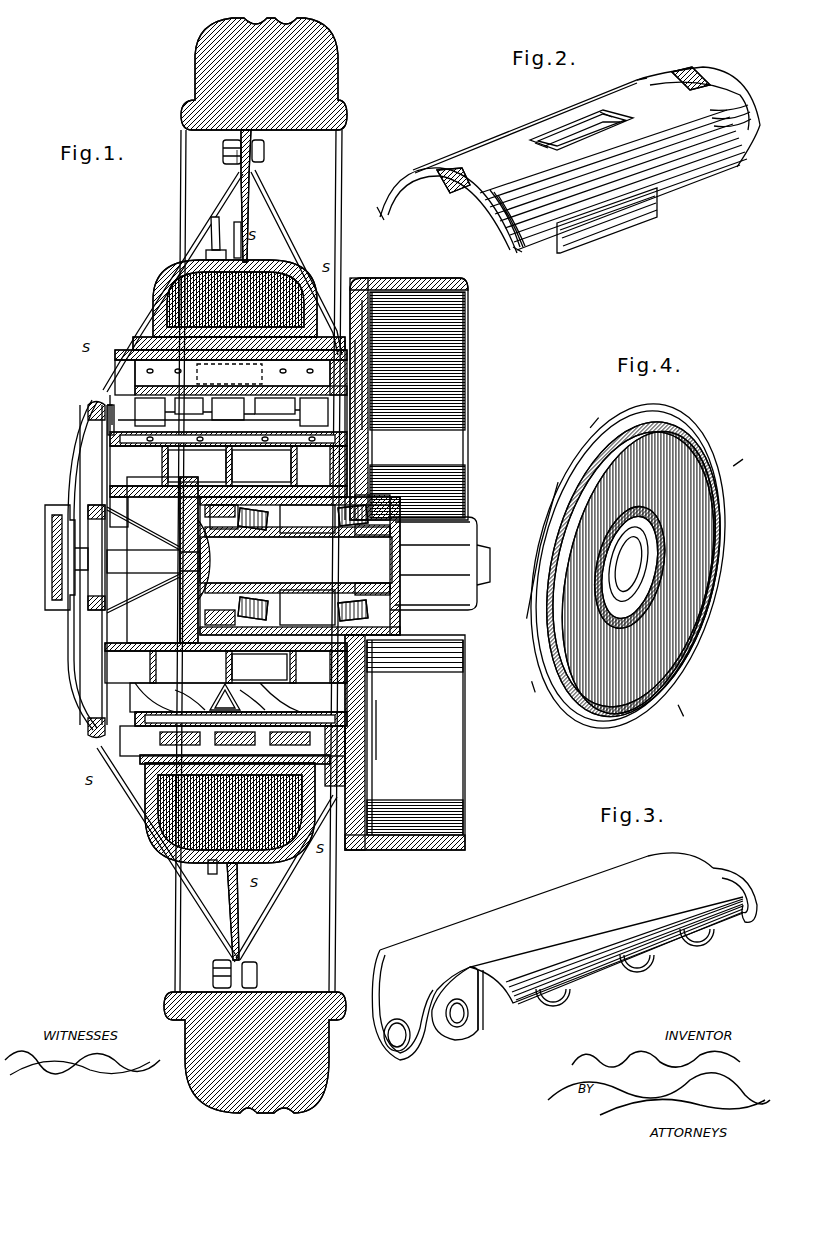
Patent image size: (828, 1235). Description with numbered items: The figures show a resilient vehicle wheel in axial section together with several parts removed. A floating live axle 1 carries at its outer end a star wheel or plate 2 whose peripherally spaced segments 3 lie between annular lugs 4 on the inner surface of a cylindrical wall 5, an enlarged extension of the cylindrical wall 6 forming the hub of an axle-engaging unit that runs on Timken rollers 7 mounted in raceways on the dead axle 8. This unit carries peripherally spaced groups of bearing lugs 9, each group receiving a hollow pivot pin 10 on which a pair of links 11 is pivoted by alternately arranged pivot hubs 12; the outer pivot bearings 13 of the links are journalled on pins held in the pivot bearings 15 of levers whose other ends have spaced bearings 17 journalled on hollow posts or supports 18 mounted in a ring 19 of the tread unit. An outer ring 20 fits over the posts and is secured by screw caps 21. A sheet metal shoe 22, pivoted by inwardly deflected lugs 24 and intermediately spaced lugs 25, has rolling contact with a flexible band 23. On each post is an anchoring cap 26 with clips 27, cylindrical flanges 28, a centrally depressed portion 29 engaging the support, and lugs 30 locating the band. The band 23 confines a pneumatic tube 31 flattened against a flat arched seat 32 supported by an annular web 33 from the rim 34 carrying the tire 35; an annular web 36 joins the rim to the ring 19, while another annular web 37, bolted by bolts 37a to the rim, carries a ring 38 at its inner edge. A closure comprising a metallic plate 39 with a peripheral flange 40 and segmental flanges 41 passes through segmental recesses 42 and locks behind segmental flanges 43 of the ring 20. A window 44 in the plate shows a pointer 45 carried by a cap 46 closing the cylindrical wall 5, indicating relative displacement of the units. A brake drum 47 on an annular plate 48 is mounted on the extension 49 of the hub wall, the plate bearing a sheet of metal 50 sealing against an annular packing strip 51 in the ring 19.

In FIG. 1, the floating live axle 1 is at (498, 556).
In FIG. 1, the star wheel or plate 2 is at (185, 527).
In FIG. 1, the peripherally spaced segments 3 is at (180, 633).
In FIG. 1, the annular lugs 4 is at (176, 483).
In FIG. 1, the cylindrical wall 5 is at (155, 480).
In FIG. 1, the cylindrical wall 6 is at (265, 490).
In FIG. 1, the Timken rollers 7 is at (270, 514).
In FIG. 1, the dead axle 8 is at (300, 566).
In FIG. 1, the bearing lugs 9 is at (222, 462).
In FIG. 1, the pivot pin 10 is at (228, 579).
In FIG. 1, the links 11 is at (228, 413).
In FIG. 1, the pivot hubs 12 is at (226, 663).
In FIG. 1, the pivot bearings 13 is at (238, 697).
In FIG. 1, the pivot bearings 15 is at (225, 697).
In FIG. 1, the spaced bearings 17 is at (241, 379).
In FIG. 1, the hollow post or support 18 is at (232, 373).
In FIG. 1, the ring 19 is at (376, 780).
In FIG. 1, the outer ring 20 is at (88, 408).
In FIG. 1, the screw caps 21 is at (112, 366).
In FIG. 1, the shoe 22 is at (230, 812).
In FIG. 3, the shoe 22 is at (540, 890).
In FIG. 1, the flexible band 23 is at (160, 340).
In FIG. 1, the inwardly deflected lugs 24 is at (160, 748).
In FIG. 3, the inwardly deflected lugs 24 is at (740, 925).
In FIG. 1, the intermediately spaced lugs 25 is at (214, 694).
In FIG. 3, the intermediately spaced lugs 25 is at (482, 1030).
In FIG. 2, the anchoring cap 26 is at (498, 153).
In FIG. 2, the clips 27 is at (615, 222).
In FIG. 2, the cylindrical flanges 28 is at (458, 205).
In FIG. 1, the centrally depressed portion 29 is at (229, 374).
In FIG. 2, the centrally depressed portion 29 is at (565, 127).
In FIG. 2, the lug 30 is at (447, 168).
In FIG. 1, the pneumatic tube 31 is at (170, 280).
In FIG. 1, the flat arched seat 32 is at (205, 262).
In FIG. 1, the annular web 33 is at (247, 205).
In FIG. 1, the rim 34 is at (340, 160).
In FIG. 1, the tire 35 is at (322, 68).
In FIG. 1, the annular web 36 is at (300, 270).
In FIG. 1, the annular web 37 is at (150, 300).
In FIG. 1, the bolts 37a is at (228, 160).
In FIG. 1, the ring 38 is at (120, 350).
In FIG. 1, the metallic plate 39 is at (68, 645).
In FIG. 4, the metallic plate 39 is at (700, 510).
In FIG. 4, the peripheral flange 40 is at (597, 455).
In FIG. 4, the segmental flanges 41 is at (685, 417).
In FIG. 1, the segmental recesses 42 is at (95, 420).
In FIG. 1, the segmental flanges 43 is at (118, 420).
In FIG. 4, the window 44 is at (632, 560).
In FIG. 1, the pointer 45 is at (58, 556).
In FIG. 1, the cap 46 is at (95, 520).
In FIG. 1, the brake drum 47 is at (438, 280).
In FIG. 1, the annular plate 48 is at (366, 420).
In FIG. 1, the extension 49 is at (378, 500).
In FIG. 1, the sheet of metal 50 is at (372, 320).
In FIG. 1, the annular packing strip 51 is at (362, 747).